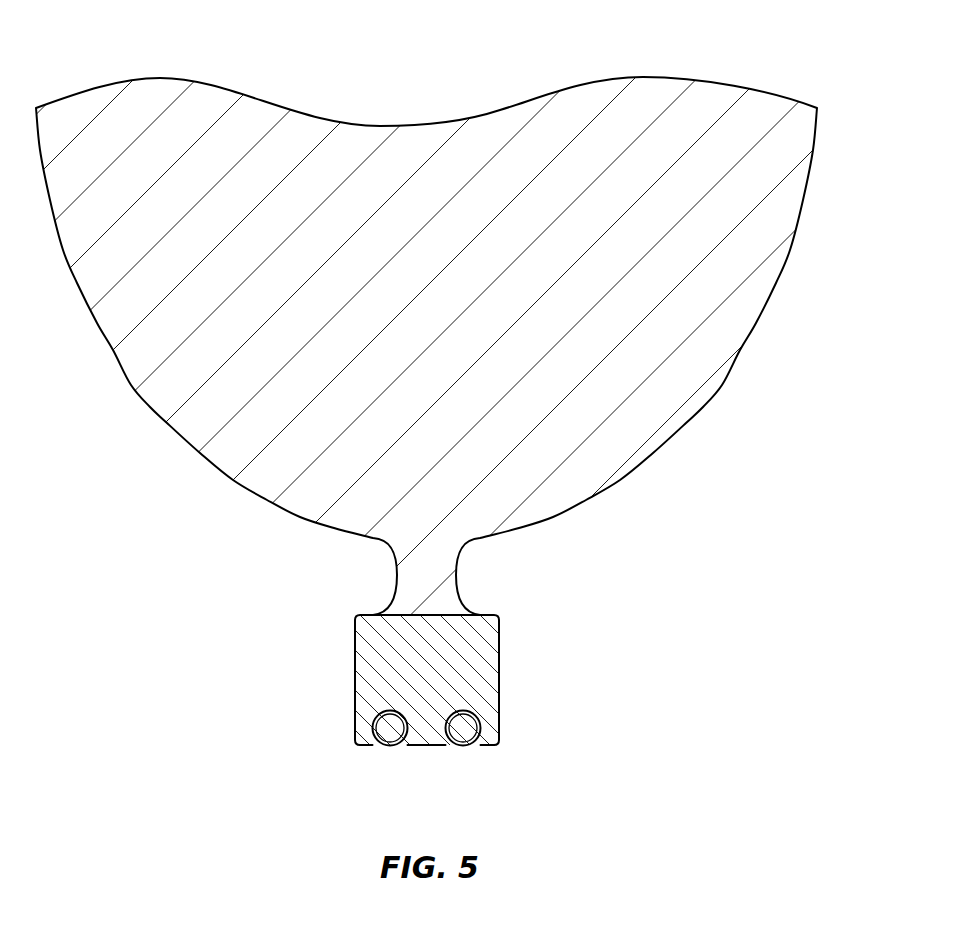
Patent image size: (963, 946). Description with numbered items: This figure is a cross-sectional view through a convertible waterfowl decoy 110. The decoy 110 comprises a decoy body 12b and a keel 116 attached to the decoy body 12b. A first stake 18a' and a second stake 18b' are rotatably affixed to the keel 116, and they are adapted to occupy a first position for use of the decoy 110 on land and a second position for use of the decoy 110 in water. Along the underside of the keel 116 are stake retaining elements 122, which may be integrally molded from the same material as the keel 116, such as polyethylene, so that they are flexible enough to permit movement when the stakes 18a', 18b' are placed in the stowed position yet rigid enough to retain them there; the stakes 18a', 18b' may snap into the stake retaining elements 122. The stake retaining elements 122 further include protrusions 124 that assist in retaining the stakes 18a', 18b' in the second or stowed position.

The decoy 110 is at (132, 46).
The decoy body 12b is at (795, 235).
The keel 116 is at (462, 668).
The stake retaining elements 122 is at (363, 737).
The protrusions 124 is at (402, 745).
The first stake 18a' is at (512, 707).
The second stake 18b' is at (345, 707).